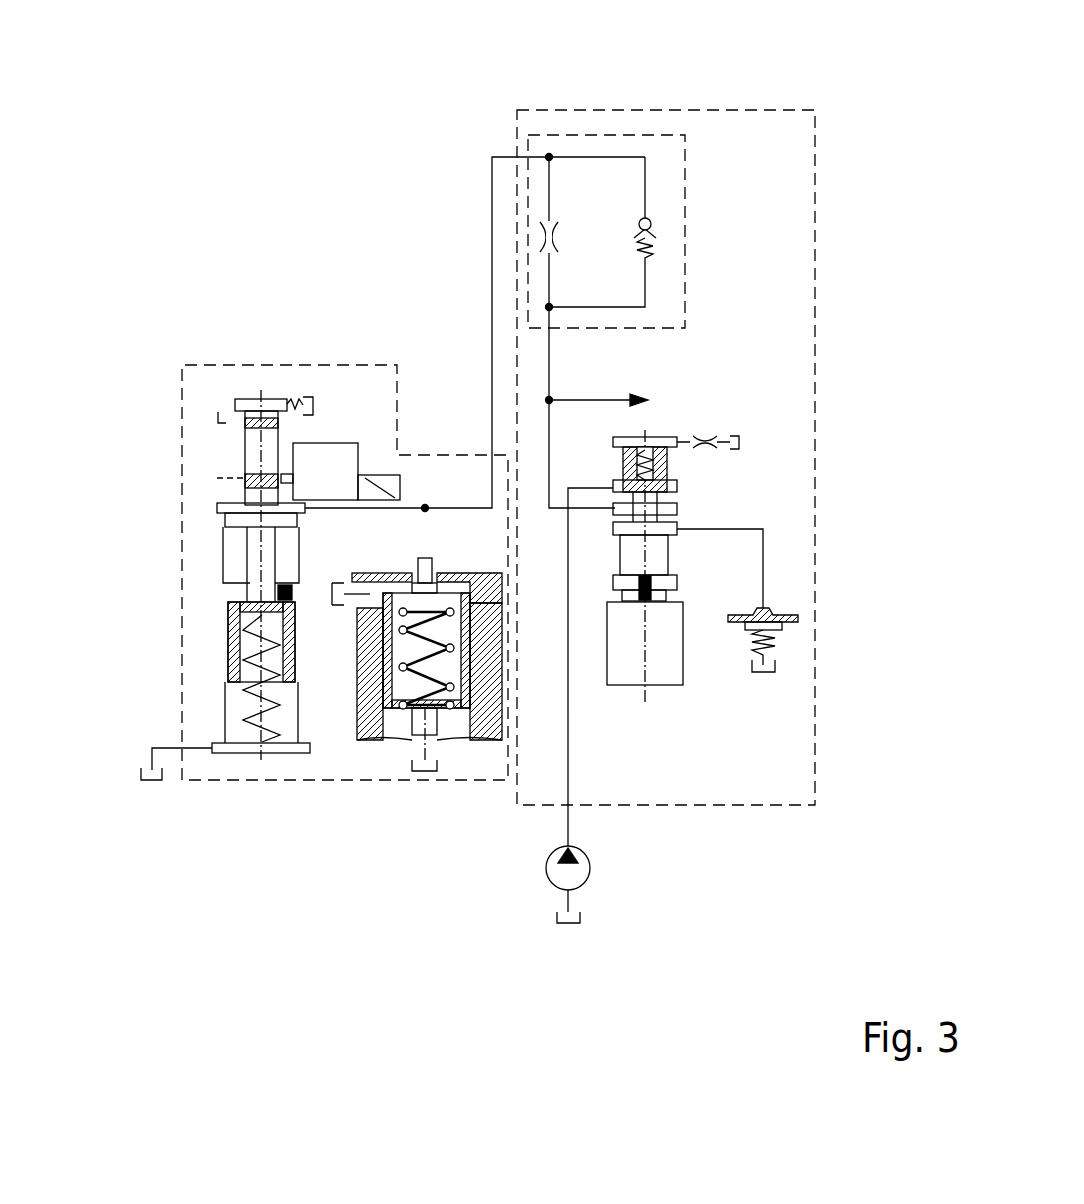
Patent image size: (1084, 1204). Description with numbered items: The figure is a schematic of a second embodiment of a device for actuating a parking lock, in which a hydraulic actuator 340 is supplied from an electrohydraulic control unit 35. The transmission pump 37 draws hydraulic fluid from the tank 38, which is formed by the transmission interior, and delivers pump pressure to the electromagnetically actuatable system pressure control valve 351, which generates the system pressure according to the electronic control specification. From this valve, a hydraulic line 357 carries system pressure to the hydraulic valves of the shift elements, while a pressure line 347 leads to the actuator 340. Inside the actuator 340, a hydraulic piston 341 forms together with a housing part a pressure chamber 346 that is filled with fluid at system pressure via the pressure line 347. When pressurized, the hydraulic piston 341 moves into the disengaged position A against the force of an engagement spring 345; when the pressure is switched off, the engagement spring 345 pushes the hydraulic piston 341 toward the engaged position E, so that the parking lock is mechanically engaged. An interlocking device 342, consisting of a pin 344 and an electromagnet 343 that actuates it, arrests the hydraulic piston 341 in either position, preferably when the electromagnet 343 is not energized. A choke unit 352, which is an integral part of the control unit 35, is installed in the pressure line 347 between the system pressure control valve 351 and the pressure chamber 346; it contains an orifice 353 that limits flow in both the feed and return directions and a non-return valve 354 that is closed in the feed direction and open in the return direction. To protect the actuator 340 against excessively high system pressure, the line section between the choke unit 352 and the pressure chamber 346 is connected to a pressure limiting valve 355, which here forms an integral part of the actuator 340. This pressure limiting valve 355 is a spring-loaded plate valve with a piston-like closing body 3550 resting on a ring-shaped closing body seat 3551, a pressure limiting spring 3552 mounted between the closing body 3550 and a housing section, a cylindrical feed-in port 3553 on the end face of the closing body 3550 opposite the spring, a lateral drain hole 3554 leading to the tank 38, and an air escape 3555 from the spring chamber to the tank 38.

The hydraulic control unit 35 is at (815, 284).
The pump 37 is at (590, 876).
The tank 38 is at (306, 396).
The actuator 340 is at (182, 718).
The hydraulic piston 341 is at (243, 518).
The interlocking device 342 is at (338, 432).
The electromagnet 343 is at (387, 475).
The pin 344 is at (291, 476).
The engagement spring 345 is at (228, 708).
The pressure chamber 346 is at (217, 508).
The pressure line 347 is at (536, 160).
The system pressure control valve 351 is at (695, 514).
The choke unit 352 is at (687, 247).
The orifice 353 is at (556, 235).
The non-return valve 354 is at (660, 210).
The pressure limiting valve 355 is at (398, 755).
The hydraulic line 357 is at (592, 400).
The closing body 3550 is at (437, 580).
The closing body seat 3551 is at (412, 590).
The pressure limiting spring 3552 is at (445, 663).
The feed-in port 3553 is at (432, 583).
The drain hole 3554 is at (368, 598).
The air escape 3555 is at (432, 730).
The disengaged position A is at (218, 412).
The engaged position E is at (228, 478).